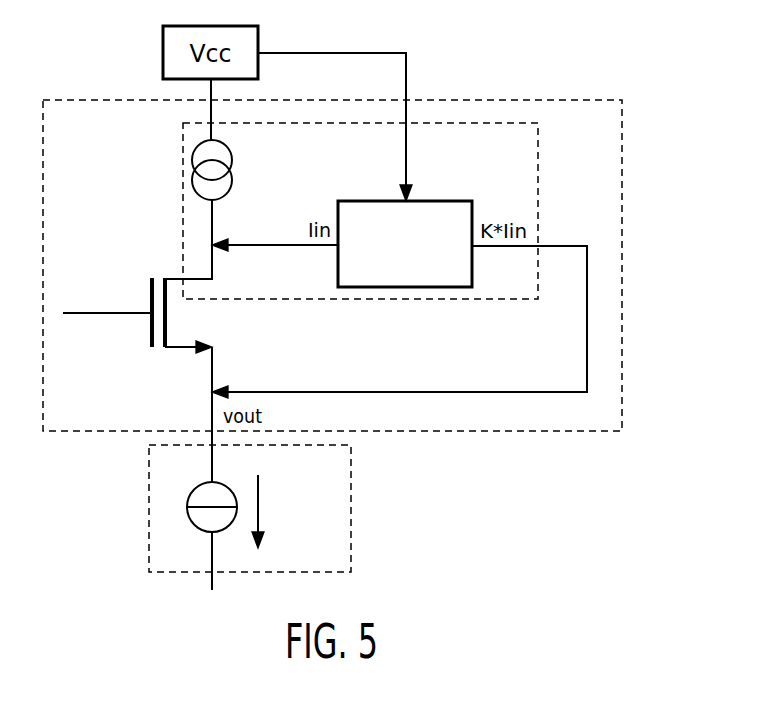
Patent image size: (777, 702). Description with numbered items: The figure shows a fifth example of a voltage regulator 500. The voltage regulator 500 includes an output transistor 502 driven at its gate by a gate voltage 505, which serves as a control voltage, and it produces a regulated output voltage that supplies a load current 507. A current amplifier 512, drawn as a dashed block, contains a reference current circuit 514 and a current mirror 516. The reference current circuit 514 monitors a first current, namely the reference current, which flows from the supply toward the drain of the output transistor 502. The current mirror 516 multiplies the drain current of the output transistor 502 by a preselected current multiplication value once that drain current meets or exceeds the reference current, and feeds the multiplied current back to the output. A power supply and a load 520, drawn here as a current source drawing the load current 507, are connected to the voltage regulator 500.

The fifth voltage regulator 500 is at (622, 138).
The output transistor 502 is at (150, 337).
The gate voltage 505 is at (105, 277).
The load current 507 is at (262, 487).
The current amplifier 512 is at (538, 176).
The reference current circuit 514 is at (232, 162).
The current mirror 516 is at (440, 201).
The load 520 is at (351, 490).